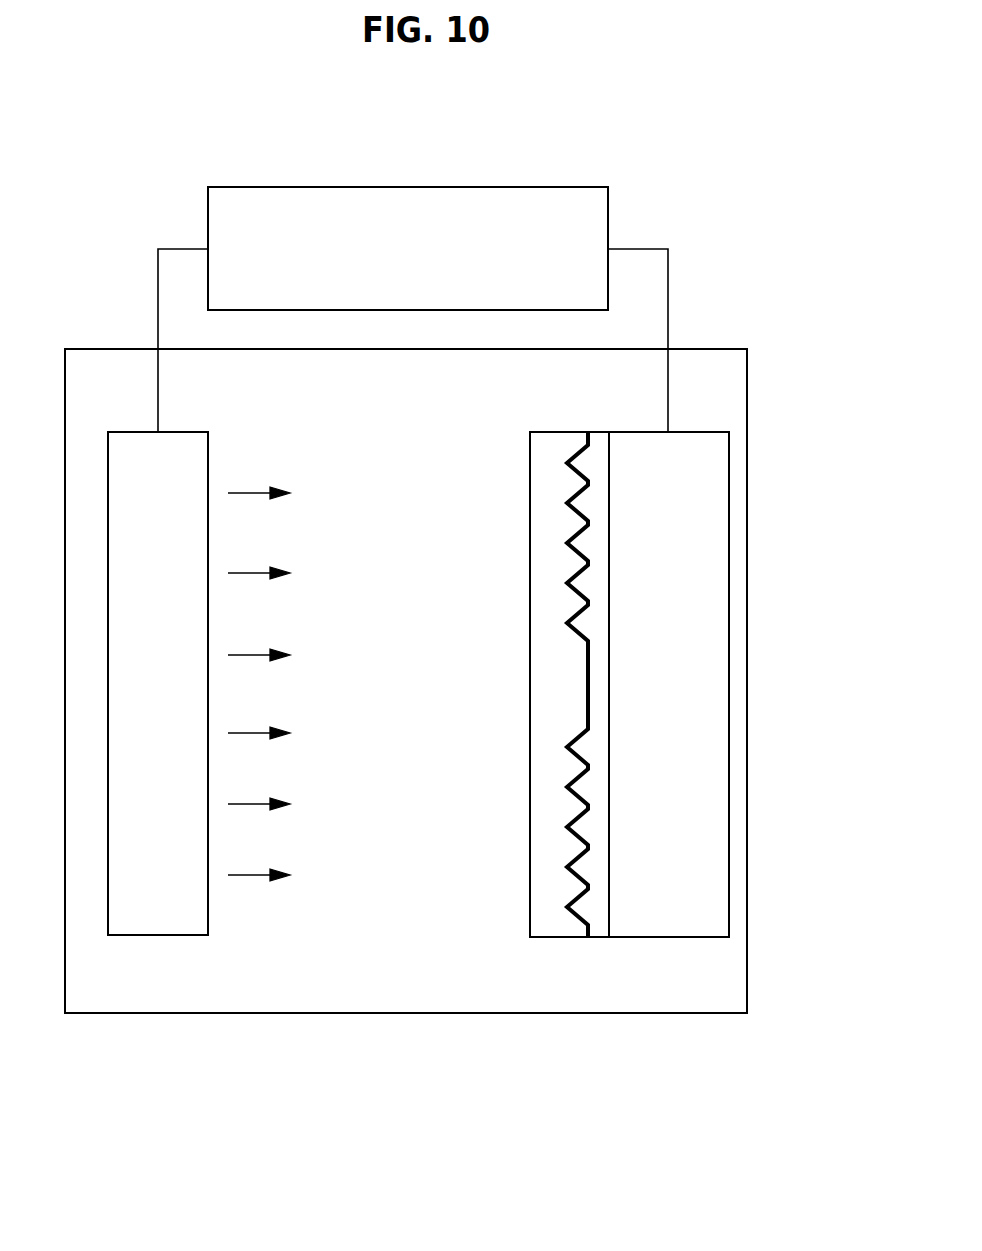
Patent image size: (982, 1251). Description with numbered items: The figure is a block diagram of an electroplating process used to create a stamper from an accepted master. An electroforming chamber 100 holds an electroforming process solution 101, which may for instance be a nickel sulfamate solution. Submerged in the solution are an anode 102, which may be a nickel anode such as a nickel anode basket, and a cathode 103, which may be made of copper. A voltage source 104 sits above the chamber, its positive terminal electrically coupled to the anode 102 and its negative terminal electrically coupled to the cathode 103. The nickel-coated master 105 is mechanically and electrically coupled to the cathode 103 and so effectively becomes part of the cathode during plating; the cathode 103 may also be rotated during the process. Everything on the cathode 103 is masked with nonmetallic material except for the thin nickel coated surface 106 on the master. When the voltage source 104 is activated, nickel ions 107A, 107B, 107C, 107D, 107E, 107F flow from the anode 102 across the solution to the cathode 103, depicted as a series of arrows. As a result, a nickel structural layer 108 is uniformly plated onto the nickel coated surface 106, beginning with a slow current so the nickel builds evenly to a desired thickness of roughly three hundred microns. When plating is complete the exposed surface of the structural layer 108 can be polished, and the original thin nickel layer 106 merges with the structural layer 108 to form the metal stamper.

The electroforming chamber 100 is at (708, 351).
The electroforming process solution 101 is at (478, 979).
The anode 102 is at (178, 735).
The cathode 103 is at (688, 737).
The voltage source 104 is at (430, 277).
The nickel-coated master 105 is at (597, 432).
The nickel coated surface 106 is at (587, 432).
The nickel ions 107A is at (259, 504).
The nickel ions 107B is at (259, 584).
The nickel ions 107C is at (259, 665).
The nickel ions 107D is at (259, 744).
The nickel ions 107E is at (259, 815).
The nickel ions 107F is at (259, 885).
The nickel structural layer 108 is at (530, 475).